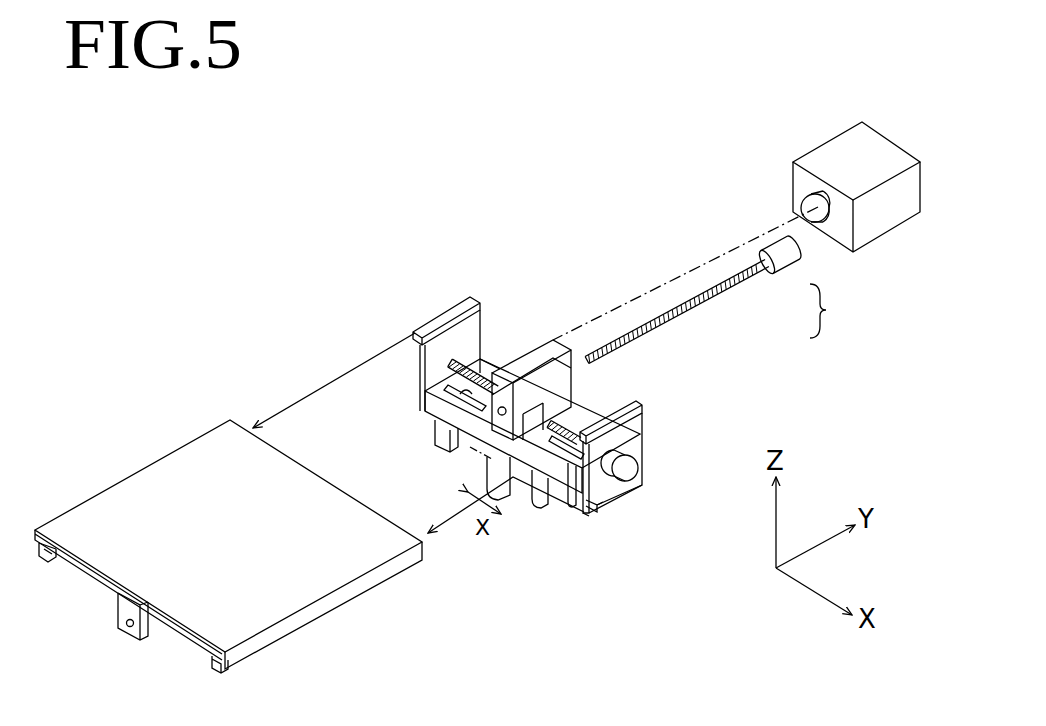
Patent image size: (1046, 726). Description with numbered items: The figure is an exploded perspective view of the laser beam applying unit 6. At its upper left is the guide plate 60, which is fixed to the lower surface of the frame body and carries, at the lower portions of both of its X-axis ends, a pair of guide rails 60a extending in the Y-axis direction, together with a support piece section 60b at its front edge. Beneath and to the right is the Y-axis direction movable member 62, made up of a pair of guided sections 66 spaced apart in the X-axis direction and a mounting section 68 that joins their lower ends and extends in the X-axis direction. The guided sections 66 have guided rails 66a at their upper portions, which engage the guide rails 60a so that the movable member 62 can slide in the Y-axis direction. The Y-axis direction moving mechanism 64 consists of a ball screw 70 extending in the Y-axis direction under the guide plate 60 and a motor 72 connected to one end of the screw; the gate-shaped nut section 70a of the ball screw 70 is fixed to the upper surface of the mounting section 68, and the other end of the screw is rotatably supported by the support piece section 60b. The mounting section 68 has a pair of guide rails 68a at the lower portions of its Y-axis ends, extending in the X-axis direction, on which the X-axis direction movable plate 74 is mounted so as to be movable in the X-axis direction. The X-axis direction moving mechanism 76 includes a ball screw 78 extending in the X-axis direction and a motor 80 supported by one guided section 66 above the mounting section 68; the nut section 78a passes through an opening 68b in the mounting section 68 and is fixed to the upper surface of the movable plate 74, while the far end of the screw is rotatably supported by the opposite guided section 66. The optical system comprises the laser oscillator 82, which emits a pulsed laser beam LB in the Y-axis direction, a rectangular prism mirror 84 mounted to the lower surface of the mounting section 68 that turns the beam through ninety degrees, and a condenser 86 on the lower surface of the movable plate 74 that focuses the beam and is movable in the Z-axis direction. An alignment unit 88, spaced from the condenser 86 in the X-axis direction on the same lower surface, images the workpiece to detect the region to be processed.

The laser beam applying unit 6 is at (294, 362).
The guide plate 60 is at (150, 480).
The guide rails 60a is at (42, 556).
The support piece section 60b is at (118, 625).
The Y-axis direction movable member 62 is at (592, 514).
The Y-axis direction moving mechanism 64 is at (835, 311).
The guided sections 66 is at (463, 330).
The guided rails 66a is at (452, 316).
The mounting section 68 is at (500, 380).
The guide rails 68a is at (640, 482).
The opening 68b is at (443, 405).
The ball screw 70 is at (720, 290).
The nut section 70a is at (556, 362).
The motor 72 is at (790, 268).
The X-axis direction movable plate 74 is at (569, 482).
The X-axis direction moving mechanism 76 is at (648, 489).
The ball screw 78 is at (447, 381).
The nut section 78a is at (575, 422).
The motor 80 is at (632, 470).
The laser oscillator 82 is at (835, 147).
The rectangular prism mirror 84 is at (434, 436).
The condenser 86 is at (487, 470).
The alignment unit 88 is at (540, 502).
The laser beam LB is at (660, 292).